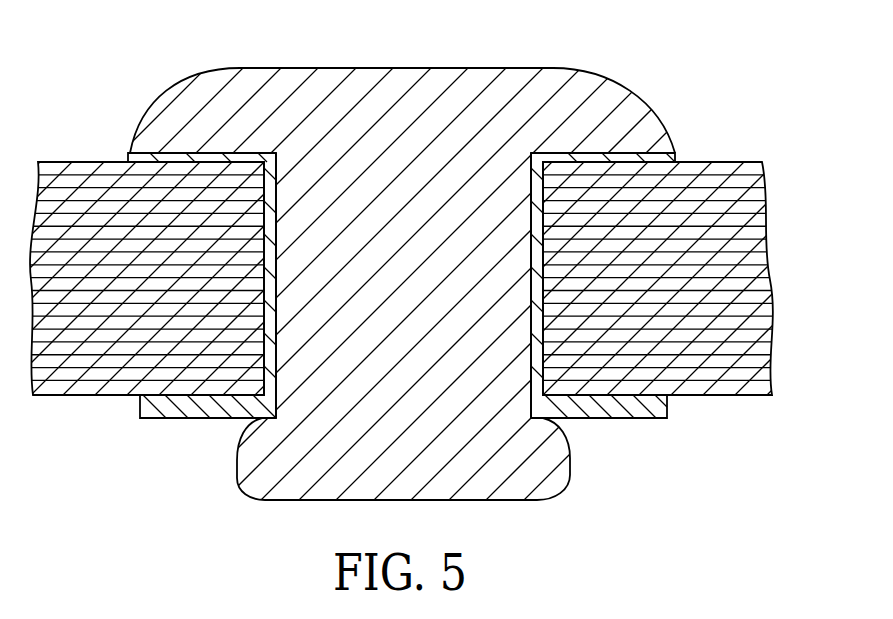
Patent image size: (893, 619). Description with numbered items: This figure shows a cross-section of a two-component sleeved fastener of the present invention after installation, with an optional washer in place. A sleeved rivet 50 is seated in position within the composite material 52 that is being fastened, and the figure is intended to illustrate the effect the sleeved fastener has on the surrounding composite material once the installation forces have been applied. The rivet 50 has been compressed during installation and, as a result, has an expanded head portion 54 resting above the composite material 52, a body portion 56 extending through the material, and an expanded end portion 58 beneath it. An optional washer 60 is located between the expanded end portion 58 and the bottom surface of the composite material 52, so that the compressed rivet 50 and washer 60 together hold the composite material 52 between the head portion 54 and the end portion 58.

The sleeved rivet 50 is at (570, 70).
The composite material 52 is at (770, 238).
The expanded head portion 54 is at (288, 72).
The body portion 56 is at (397, 228).
The expanded end portion 58 is at (250, 457).
The washer 60 is at (140, 403).